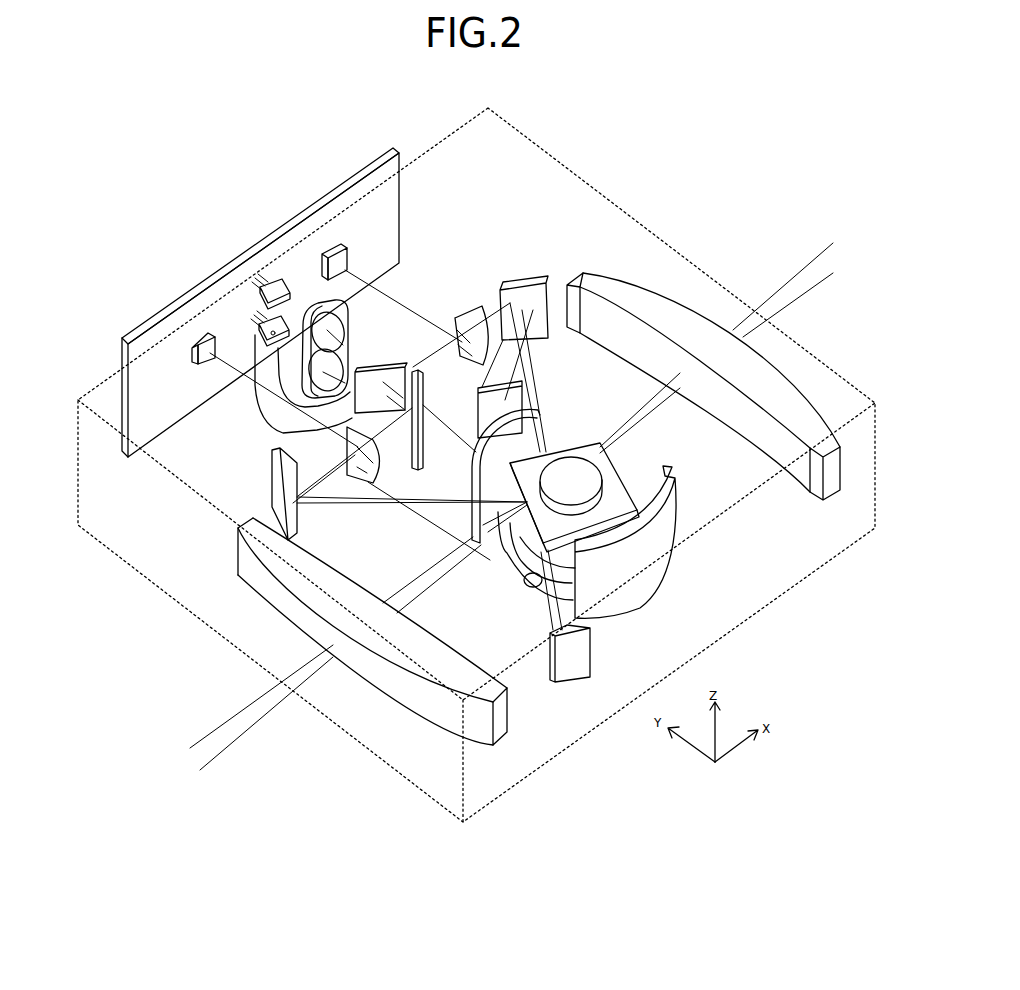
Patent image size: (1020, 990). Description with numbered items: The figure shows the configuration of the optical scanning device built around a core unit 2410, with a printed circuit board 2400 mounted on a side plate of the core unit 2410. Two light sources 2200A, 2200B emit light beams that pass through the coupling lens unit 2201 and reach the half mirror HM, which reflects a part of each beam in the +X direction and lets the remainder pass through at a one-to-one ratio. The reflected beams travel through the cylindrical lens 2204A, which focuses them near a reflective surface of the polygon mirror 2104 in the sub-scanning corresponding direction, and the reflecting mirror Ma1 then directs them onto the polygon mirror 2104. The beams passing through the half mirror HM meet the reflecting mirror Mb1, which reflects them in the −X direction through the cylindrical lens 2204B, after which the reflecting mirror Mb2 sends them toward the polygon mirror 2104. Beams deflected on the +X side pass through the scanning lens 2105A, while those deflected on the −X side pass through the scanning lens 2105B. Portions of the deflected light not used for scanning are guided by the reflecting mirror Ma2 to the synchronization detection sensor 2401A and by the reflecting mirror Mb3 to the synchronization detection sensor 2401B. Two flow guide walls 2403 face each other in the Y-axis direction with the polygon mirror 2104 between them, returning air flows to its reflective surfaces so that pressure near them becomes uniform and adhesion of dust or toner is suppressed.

The core unit 2410 is at (667, 246).
The printed circuit board 2400 is at (280, 228).
The synchronization detection sensor 2401A is at (346, 260).
The synchronization detection sensor 2401B is at (192, 358).
The light source 2200A is at (258, 272).
The light source 2200B is at (262, 314).
The coupling lens unit 2201 is at (350, 338).
The half mirror HM is at (353, 416).
The cylindrical lens 2204A is at (463, 313).
The cylindrical lens 2204B is at (363, 487).
The reflecting mirror Ma1 is at (523, 280).
The reflecting mirror Ma2 is at (478, 402).
The reflecting mirror Mb1 is at (423, 420).
The reflecting mirror Mb2 is at (272, 483).
The reflecting mirror Mb3 is at (592, 658).
The scanning lens 2105A is at (606, 346).
The scanning lens 2105B is at (430, 642).
The polygon mirror 2104 is at (601, 449).
The flow guide wall 2403 is at (472, 530).